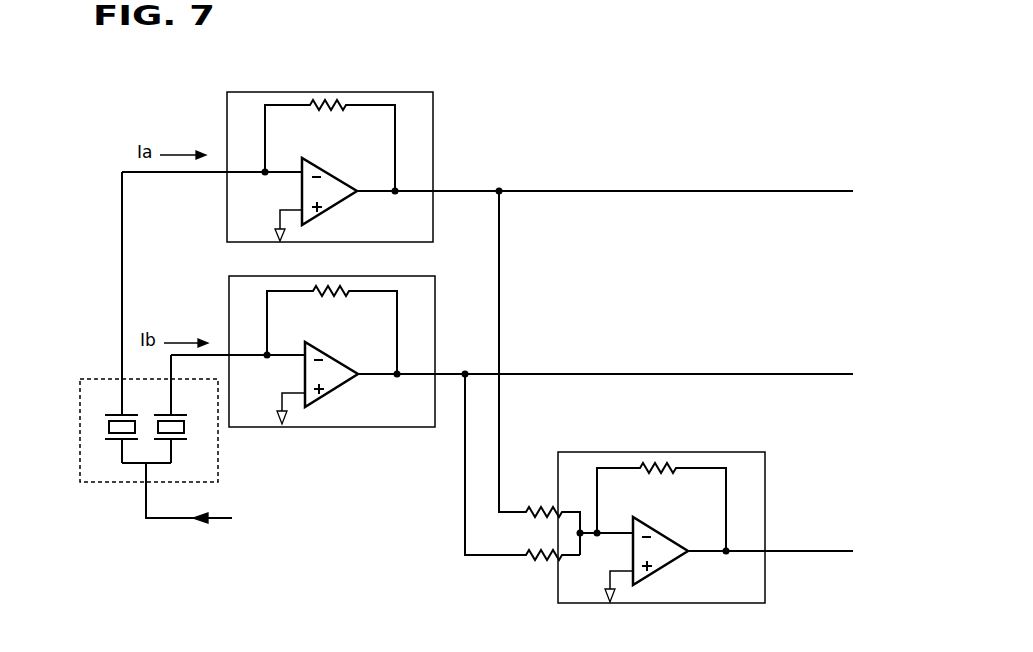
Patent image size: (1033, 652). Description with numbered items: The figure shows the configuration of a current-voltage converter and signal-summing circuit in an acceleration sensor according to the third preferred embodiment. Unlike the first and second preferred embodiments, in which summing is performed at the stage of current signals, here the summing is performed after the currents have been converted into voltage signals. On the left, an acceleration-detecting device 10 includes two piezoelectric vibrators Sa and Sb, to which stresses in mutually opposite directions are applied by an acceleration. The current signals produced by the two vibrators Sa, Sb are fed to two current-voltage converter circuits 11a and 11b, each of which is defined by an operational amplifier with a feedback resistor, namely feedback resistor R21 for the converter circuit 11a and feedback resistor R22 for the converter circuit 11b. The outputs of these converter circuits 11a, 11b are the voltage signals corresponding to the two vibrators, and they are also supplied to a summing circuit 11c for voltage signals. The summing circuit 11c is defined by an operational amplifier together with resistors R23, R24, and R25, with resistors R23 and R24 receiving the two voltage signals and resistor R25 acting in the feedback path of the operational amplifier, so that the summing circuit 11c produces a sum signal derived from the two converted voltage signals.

The acceleration-detecting device 10 is at (76, 378).
The current-voltage converter circuit 11a is at (433, 92).
The current-voltage converter circuit 11b is at (434, 276).
The summing circuit 11c is at (765, 452).
The feedback resistor R21 is at (330, 145).
The feedback resistor R22 is at (332, 330).
The resistor R23 is at (539, 373).
The resistor R24 is at (522, 479).
The resistor R25 is at (661, 507).
The piezoelectric vibrator Sa is at (113, 317).
The piezoelectric vibrator Sb is at (176, 409).